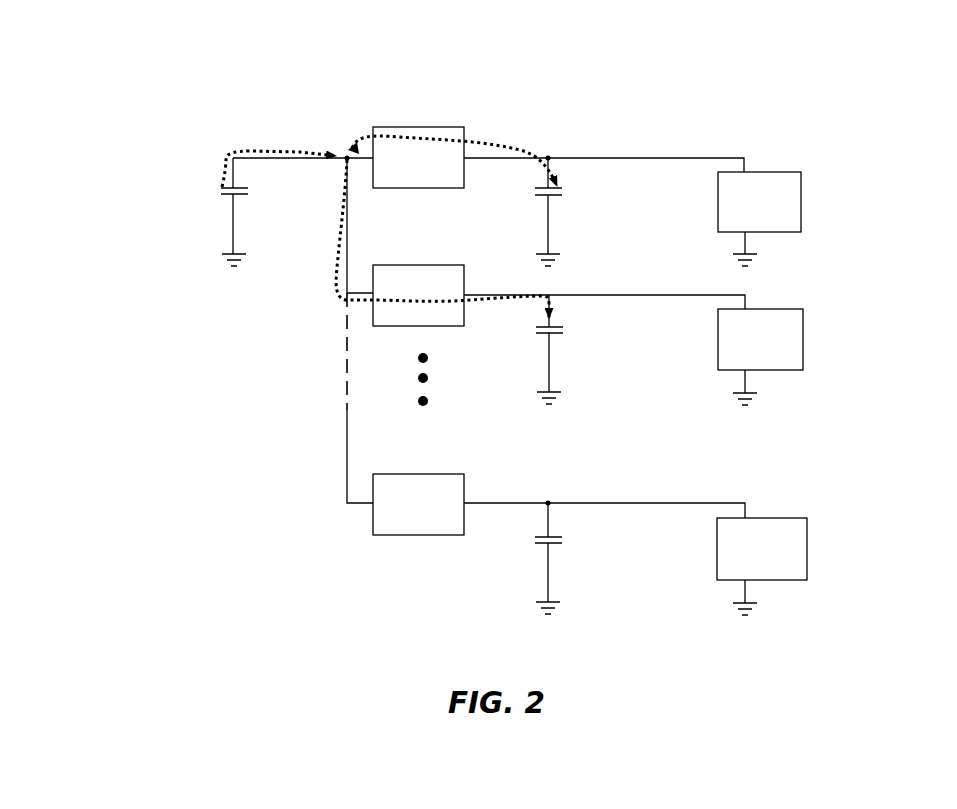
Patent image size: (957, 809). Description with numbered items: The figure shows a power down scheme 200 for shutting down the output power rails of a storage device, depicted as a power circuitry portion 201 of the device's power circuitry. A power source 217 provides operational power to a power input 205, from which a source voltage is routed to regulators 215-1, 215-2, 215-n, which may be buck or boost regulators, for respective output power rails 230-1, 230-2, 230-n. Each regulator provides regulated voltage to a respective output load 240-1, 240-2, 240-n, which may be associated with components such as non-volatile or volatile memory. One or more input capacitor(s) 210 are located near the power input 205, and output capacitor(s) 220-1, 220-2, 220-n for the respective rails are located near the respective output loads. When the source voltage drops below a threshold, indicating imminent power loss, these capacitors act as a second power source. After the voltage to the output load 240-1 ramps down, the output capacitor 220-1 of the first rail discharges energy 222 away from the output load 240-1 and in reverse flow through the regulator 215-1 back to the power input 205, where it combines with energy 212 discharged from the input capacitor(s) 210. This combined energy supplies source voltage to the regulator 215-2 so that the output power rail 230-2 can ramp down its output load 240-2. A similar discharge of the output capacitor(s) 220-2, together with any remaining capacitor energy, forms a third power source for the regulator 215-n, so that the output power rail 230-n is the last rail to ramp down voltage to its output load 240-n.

The power down scheme 200 is at (547, 35).
The power circuitry portion 201 is at (291, 462).
The power input 205 is at (343, 151).
The input capacitor(s) 210 is at (217, 190).
The energy 212 is at (217, 160).
The regulator 215-1 is at (418, 157).
The regulator 215-2 is at (418, 295).
The regulator 215-n is at (418, 504).
The power source 217 is at (327, 285).
The output capacitor(s) 220-1 is at (628, 197).
The output capacitor(s) 220-2 is at (630, 333).
The output capacitor(s) 220-n is at (628, 542).
The energy 222 is at (531, 144).
The output power rail 230-1 is at (695, 152).
The output power rail 230-2 is at (738, 289).
The output power rail 230-n is at (730, 496).
The output load 240-1 is at (759, 219).
The output load 240-2 is at (760, 357).
The output load 240-n is at (762, 566).